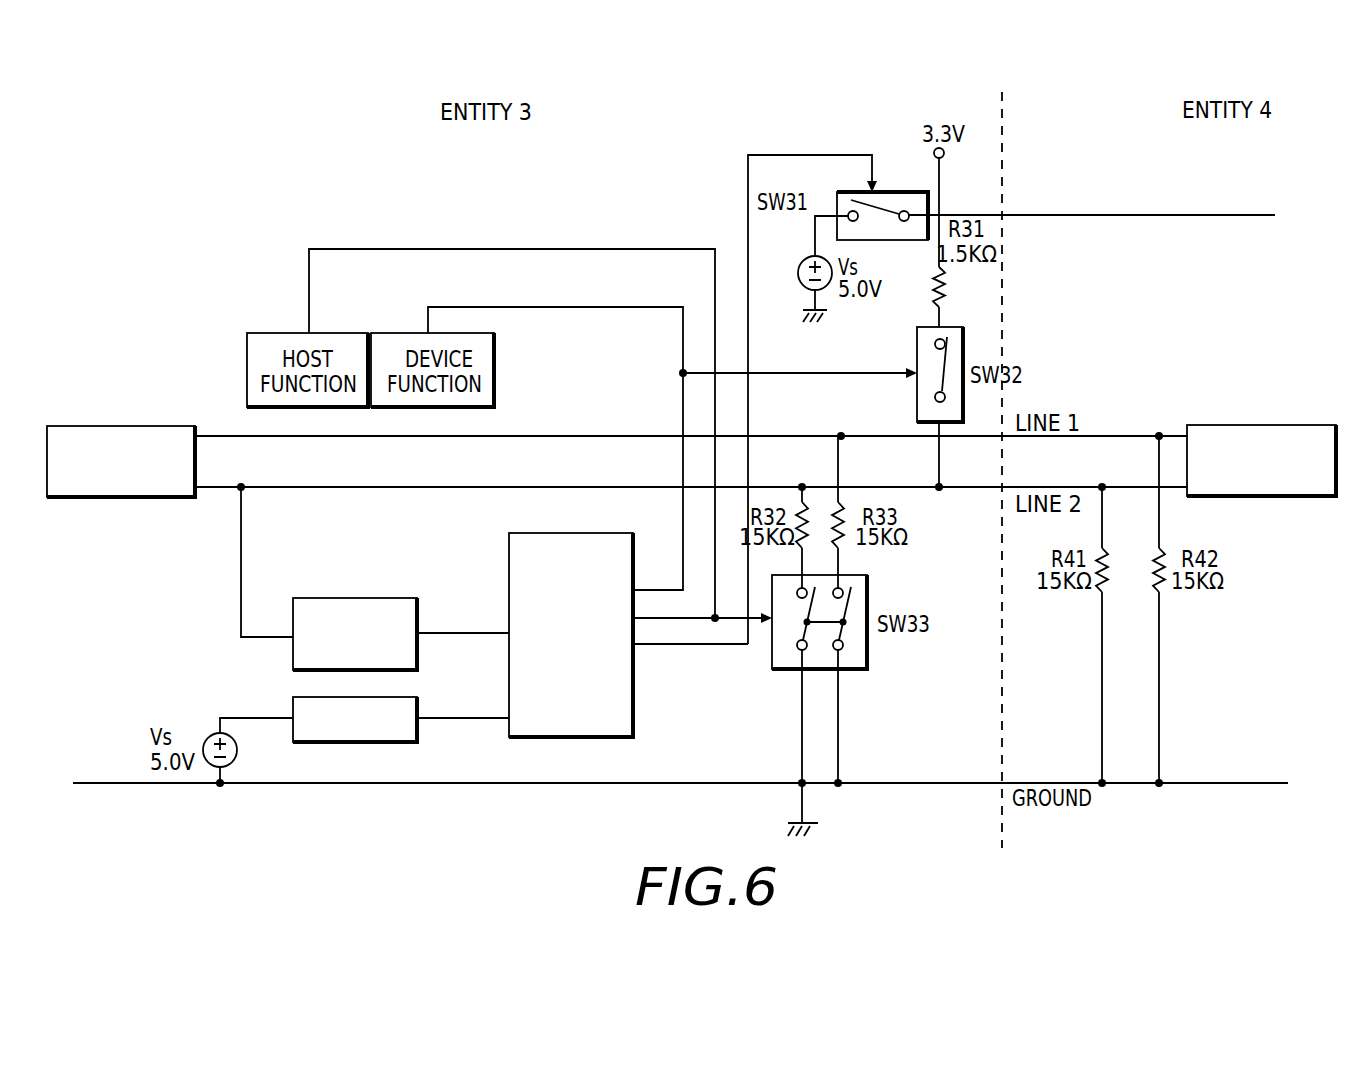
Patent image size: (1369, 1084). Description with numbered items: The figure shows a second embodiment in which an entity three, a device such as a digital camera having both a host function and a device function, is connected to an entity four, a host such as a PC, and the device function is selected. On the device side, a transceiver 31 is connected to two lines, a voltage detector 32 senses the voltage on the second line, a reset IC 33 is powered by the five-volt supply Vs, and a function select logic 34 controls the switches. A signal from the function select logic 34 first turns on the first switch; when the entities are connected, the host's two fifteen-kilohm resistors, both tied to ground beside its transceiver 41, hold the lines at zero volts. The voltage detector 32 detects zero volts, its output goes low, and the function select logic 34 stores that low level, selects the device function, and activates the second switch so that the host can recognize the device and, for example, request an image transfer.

The transceiver 31 is at (112, 425).
The voltage detector 32 is at (348, 597).
The reset IC 33 is at (418, 695).
The function select logic 34 is at (560, 532).
The transceiver 41 is at (1252, 423).